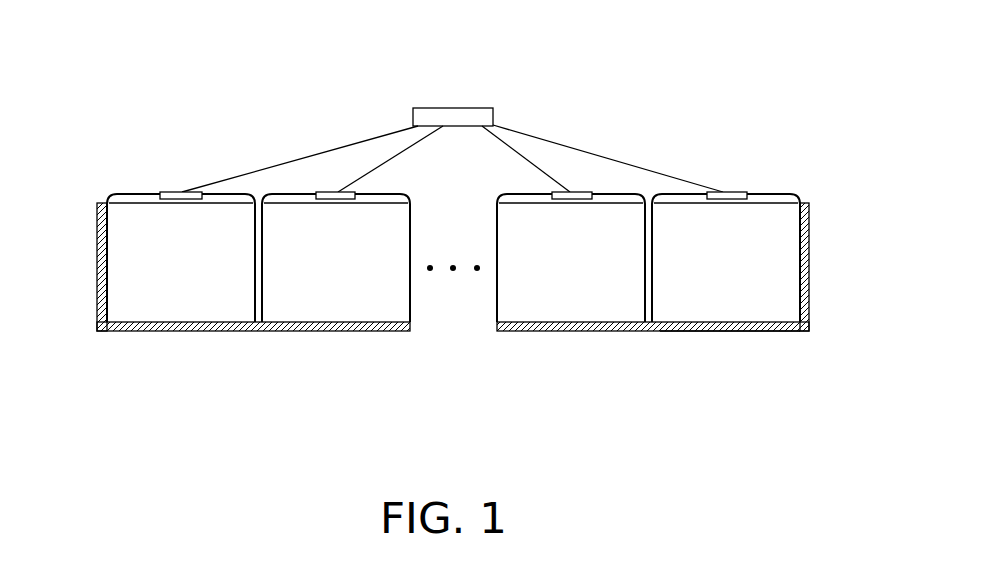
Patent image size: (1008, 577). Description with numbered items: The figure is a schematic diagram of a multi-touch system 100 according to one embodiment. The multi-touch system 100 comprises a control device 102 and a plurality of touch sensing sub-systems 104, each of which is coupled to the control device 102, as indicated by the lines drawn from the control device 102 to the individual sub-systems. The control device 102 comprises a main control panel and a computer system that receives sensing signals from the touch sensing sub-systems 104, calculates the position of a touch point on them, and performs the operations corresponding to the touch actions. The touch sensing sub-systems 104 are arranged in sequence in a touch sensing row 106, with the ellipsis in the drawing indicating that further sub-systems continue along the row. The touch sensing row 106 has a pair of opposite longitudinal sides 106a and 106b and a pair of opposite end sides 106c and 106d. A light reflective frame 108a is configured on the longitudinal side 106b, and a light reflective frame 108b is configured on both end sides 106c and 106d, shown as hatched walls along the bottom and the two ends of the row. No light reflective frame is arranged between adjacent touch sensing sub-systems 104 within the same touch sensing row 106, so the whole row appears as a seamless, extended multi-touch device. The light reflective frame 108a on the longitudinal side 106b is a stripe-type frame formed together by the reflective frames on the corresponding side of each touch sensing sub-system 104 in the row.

The multi-touch system 100 is at (618, 114).
The control device 102 is at (485, 108).
The touch sensing sub-systems 104 is at (451, 304).
The touch sensing row 106 is at (461, 265).
The longitudinal side 106a is at (773, 193).
The longitudinal side 106b is at (792, 342).
The end side 106c is at (95, 233).
The end side 106d is at (838, 284).
The light reflective frame 108a is at (118, 331).
The light reflective frame 108b is at (97, 282).